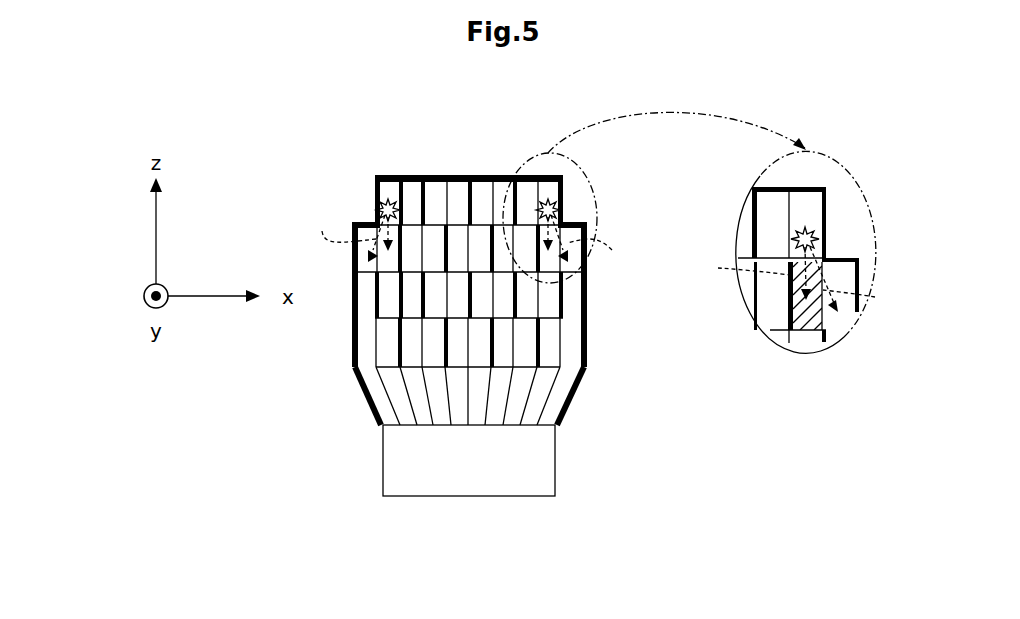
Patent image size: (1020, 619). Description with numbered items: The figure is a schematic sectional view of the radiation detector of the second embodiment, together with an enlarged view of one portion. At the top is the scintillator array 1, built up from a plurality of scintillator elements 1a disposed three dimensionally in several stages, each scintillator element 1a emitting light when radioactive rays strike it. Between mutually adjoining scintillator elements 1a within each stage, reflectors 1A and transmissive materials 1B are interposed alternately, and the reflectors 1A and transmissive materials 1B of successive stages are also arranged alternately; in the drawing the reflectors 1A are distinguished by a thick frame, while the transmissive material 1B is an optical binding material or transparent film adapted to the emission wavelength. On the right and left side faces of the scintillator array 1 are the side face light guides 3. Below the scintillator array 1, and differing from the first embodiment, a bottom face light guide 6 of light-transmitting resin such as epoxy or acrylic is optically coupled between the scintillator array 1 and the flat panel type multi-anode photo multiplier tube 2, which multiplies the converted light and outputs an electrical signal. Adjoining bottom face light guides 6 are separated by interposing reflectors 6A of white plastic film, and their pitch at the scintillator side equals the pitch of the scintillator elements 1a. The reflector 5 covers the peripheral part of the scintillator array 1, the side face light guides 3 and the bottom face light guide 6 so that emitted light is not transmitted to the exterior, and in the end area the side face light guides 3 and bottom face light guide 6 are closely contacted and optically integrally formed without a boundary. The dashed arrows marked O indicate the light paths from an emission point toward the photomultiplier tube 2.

The scintillator array 1 is at (598, 242).
The reflector 1A is at (478, 197).
The transmissive material 1B is at (399, 192).
The scintillator element 1a is at (455, 200).
The flat panel type multi-anode photo multiplier tube 2 is at (556, 456).
The side face light guide 3 is at (362, 346).
The reflector 5 is at (377, 196).
The bottom face light guide 6 is at (433, 386).
The reflector 6A is at (390, 411).
The optical path / emitted light O is at (599, 263).